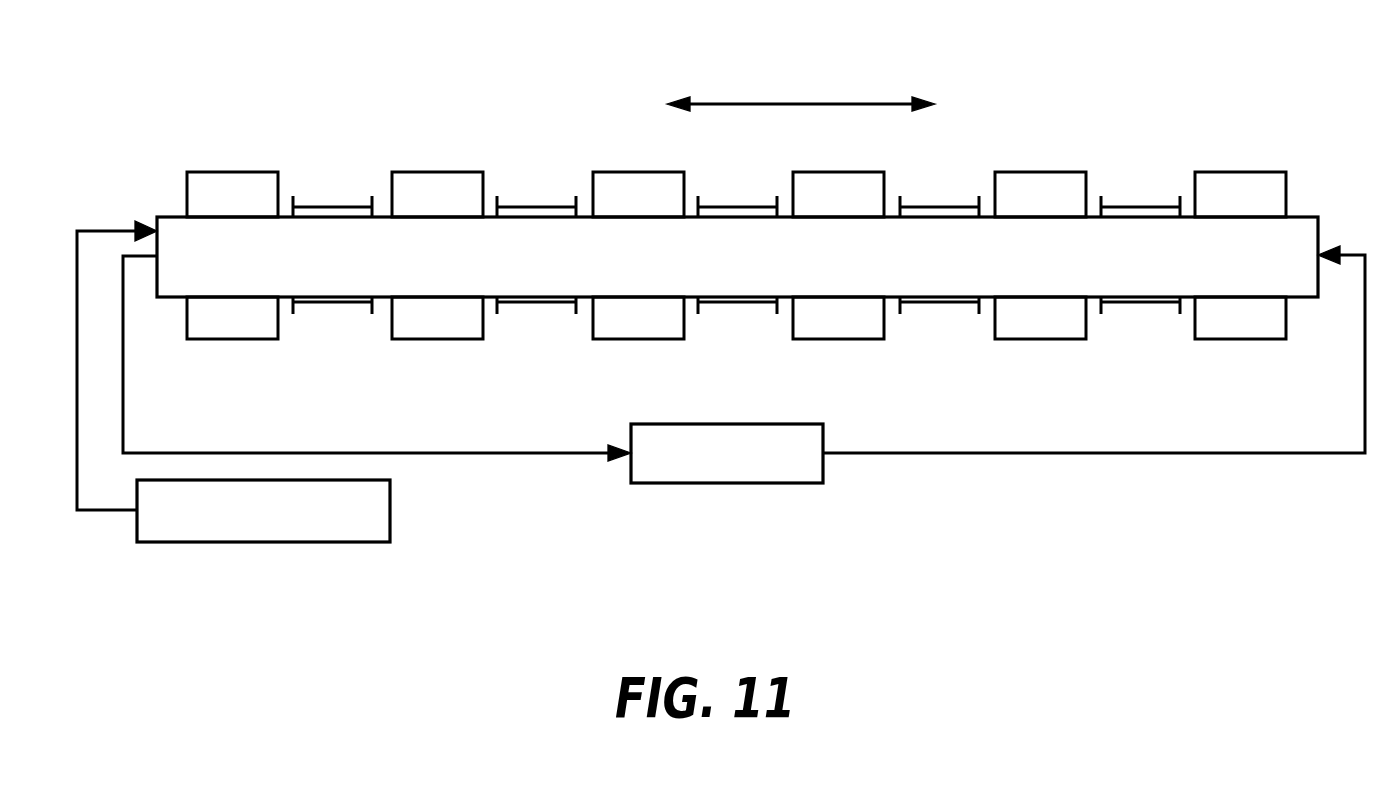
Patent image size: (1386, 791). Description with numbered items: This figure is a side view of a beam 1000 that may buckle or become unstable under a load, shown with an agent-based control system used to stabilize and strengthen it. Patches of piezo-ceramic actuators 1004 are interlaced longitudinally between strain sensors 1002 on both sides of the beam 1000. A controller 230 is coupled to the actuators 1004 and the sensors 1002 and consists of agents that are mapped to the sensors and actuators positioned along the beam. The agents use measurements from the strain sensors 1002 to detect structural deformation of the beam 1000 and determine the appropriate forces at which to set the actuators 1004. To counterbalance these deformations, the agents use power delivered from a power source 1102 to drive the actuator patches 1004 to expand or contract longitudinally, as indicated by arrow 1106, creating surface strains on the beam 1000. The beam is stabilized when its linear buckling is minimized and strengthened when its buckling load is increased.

The beam 1000 is at (1303, 213).
The sensors 1002 is at (230, 172).
The actuators 1004 is at (341, 205).
The arrow 1106 is at (787, 102).
The power source 1102 is at (391, 515).
The controller 230 is at (722, 485).